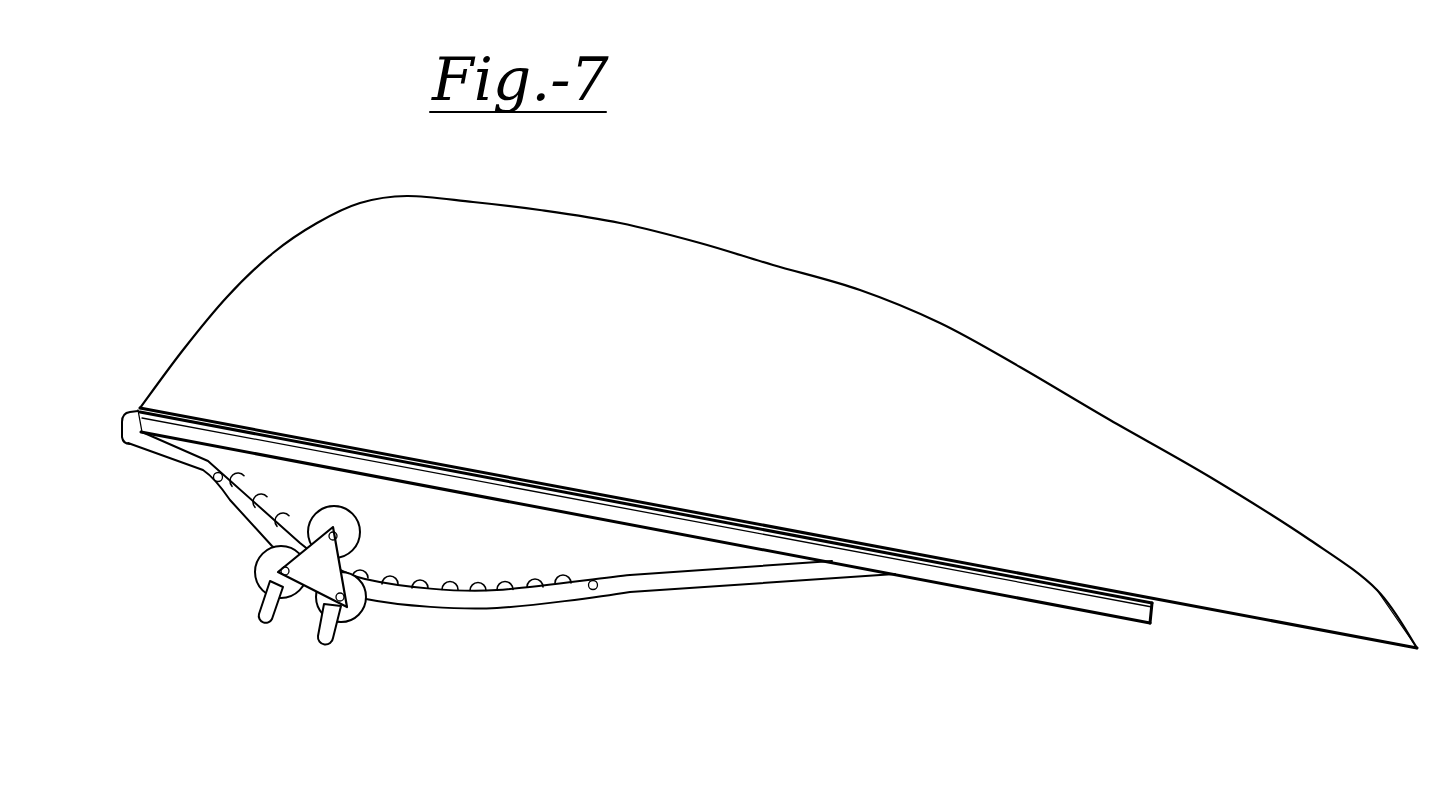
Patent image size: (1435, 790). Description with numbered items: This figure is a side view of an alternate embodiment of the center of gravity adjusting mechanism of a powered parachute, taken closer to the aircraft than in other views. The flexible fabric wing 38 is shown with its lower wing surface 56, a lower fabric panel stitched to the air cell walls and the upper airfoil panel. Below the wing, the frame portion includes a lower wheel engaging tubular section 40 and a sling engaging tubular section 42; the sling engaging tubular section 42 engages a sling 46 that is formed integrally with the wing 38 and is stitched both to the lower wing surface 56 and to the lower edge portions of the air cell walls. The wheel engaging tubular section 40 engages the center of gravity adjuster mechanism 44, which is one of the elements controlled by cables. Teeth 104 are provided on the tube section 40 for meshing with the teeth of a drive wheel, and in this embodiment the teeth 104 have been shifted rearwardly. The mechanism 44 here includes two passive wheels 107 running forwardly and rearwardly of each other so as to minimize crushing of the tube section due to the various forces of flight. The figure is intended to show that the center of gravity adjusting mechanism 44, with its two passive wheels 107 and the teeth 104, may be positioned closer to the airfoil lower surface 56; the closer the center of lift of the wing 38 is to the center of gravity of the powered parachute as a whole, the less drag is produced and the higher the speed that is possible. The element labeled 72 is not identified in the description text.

The flexible fabric wing 38 is at (775, 265).
The wheel engaging tubular section 40 is at (653, 588).
The sling engaging tubular section 42 is at (123, 417).
The center of gravity adjuster mechanism 44 is at (303, 608).
The sling 46 is at (710, 540).
The lower wing surface 56 is at (1210, 613).
The trailing edge tip 72 is at (1385, 647).
The teeth 104 is at (447, 580).
The passive wheels 107 is at (257, 557).